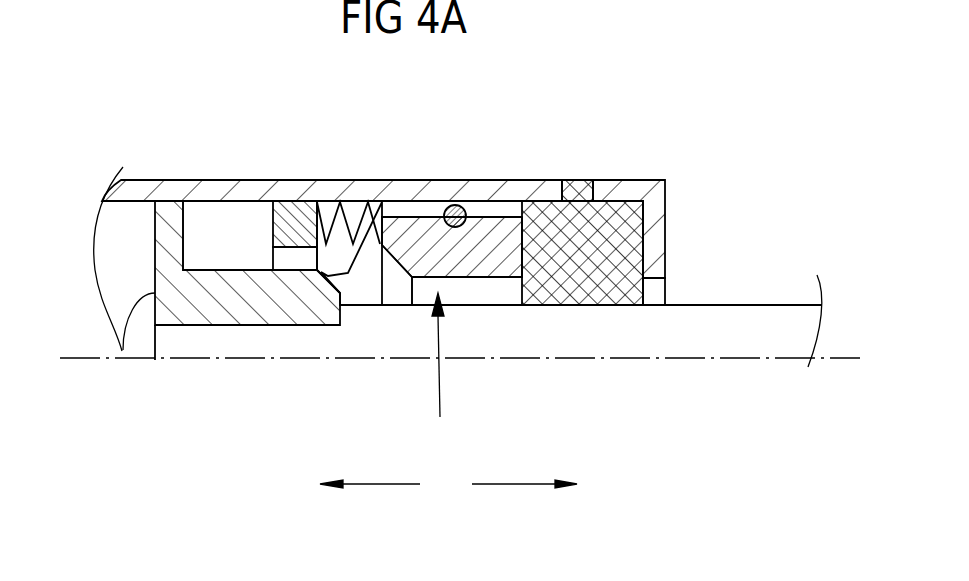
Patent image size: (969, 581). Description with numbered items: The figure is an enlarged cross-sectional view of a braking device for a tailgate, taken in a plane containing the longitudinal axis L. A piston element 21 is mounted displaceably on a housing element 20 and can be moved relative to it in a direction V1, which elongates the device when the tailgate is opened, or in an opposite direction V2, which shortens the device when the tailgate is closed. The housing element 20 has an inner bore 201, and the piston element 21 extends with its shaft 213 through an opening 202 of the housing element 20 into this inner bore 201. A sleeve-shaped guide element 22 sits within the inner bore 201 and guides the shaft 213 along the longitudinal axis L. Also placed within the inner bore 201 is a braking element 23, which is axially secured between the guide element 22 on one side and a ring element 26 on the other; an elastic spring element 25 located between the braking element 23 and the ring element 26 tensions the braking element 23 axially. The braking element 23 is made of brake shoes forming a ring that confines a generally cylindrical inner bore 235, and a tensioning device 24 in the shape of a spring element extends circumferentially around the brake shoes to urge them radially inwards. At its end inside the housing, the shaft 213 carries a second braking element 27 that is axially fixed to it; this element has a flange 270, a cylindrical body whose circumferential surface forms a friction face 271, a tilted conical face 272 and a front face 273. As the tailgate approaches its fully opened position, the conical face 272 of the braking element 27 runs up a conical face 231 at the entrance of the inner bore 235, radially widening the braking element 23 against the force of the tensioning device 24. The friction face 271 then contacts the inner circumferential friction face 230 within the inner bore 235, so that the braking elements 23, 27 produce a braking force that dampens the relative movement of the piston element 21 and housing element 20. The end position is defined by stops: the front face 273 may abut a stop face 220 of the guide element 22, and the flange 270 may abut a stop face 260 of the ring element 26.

The housing element 20 is at (647, 192).
The opening 202 is at (664, 279).
The piston element 21 is at (787, 325).
The shaft 213 is at (717, 328).
The guide element 22 is at (580, 187).
The braking element 23 is at (495, 232).
The inner circumferential friction face 230 is at (478, 277).
The conical face 231 is at (410, 276).
The stop face 220 is at (522, 293).
The tensioning device 24 is at (458, 205).
The elastic spring element 25 is at (350, 202).
The ring element 26 is at (295, 198).
The stop face 260 is at (272, 232).
The braking element 27 is at (275, 307).
The flange 270 is at (165, 222).
The friction face 271 is at (212, 262).
The inner bore 201 is at (215, 222).
The conical face 272 is at (383, 217).
The front face 273 is at (355, 308).
The inner bore 235 is at (444, 369).
The longitudinal axis L is at (81, 359).
The direction V1 is at (524, 501).
The direction V2 is at (370, 501).